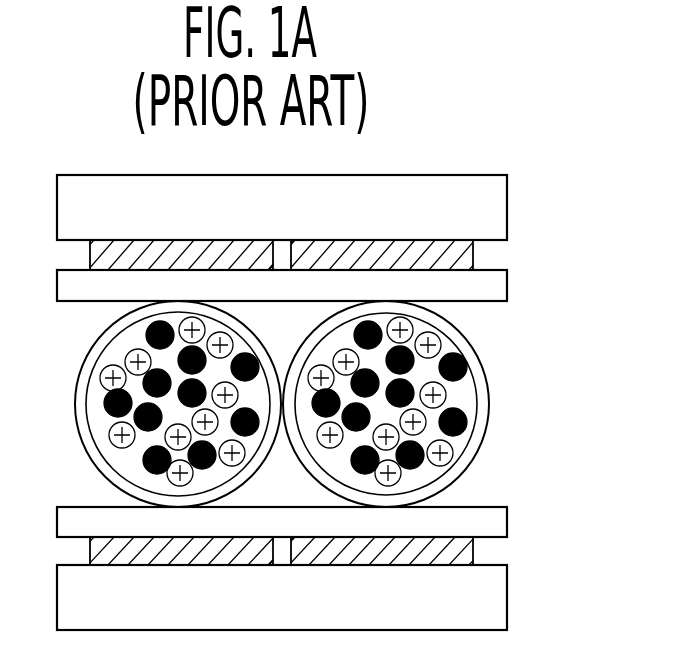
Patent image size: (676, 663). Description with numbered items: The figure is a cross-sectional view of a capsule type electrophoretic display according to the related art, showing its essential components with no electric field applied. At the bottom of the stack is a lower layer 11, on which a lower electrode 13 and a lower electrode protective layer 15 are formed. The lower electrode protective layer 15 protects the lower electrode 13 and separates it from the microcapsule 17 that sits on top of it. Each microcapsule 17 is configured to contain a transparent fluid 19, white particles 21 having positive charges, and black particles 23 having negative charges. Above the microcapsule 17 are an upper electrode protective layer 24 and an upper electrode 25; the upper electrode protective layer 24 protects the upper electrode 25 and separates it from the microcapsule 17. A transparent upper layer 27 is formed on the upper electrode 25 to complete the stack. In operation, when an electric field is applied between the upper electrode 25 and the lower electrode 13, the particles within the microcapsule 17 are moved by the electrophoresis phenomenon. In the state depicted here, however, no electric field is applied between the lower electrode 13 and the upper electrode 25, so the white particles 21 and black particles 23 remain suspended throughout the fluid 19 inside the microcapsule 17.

The lower layer 11 is at (507, 597).
The lower electrode 13 is at (467, 550).
The lower electrode protective layer 15 is at (507, 519).
The microcapsule 17 is at (485, 355).
The transparent fluid 19 is at (465, 392).
The white particles 21 is at (463, 453).
The black particles 23 is at (473, 420).
The upper electrode protective layer 24 is at (507, 287).
The upper electrode 25 is at (467, 257).
The transparent upper layer 27 is at (507, 198).